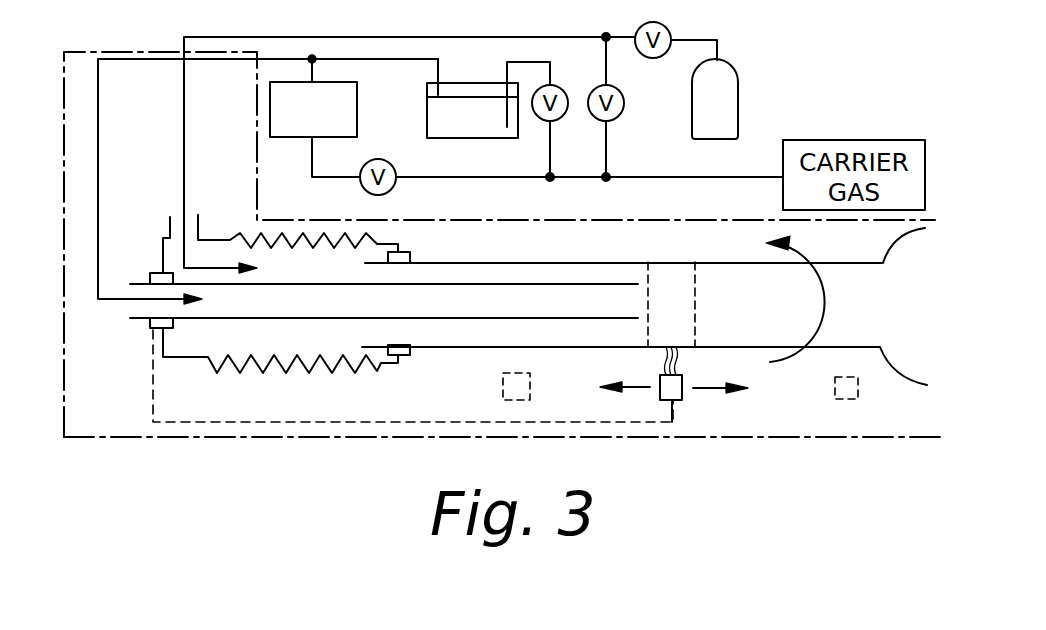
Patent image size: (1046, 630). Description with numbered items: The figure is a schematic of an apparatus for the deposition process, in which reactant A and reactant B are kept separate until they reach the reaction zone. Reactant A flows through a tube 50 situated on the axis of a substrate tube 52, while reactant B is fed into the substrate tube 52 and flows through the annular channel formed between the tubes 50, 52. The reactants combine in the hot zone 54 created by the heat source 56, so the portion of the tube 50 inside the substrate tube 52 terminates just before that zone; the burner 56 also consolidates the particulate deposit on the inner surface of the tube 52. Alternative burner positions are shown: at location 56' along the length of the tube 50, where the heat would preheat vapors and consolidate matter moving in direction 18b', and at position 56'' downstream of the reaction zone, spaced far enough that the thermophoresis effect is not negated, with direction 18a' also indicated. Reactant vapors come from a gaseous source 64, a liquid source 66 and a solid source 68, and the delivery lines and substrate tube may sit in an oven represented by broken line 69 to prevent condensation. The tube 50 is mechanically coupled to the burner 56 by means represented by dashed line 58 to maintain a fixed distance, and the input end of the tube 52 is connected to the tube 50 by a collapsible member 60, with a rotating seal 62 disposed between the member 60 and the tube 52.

The tube 50 is at (557, 284).
The substrate tube 52 is at (622, 263).
The hot zone 54 is at (668, 283).
The heat source 56 is at (693, 387).
The burner location 56' is at (482, 390).
The burner position 56'' is at (875, 403).
The mechanical coupling means 58 is at (317, 422).
The collapsible member 60 is at (257, 370).
The rotating seal 62 is at (405, 258).
The gaseous source 64 is at (730, 98).
The liquid source 66 is at (475, 127).
The solid source 68 is at (357, 113).
The oven 69 is at (293, 440).
The direction 18a' is at (599, 373).
The direction 18b' is at (759, 319).
The reactant A is at (98, 157).
The reactant B is at (184, 157).